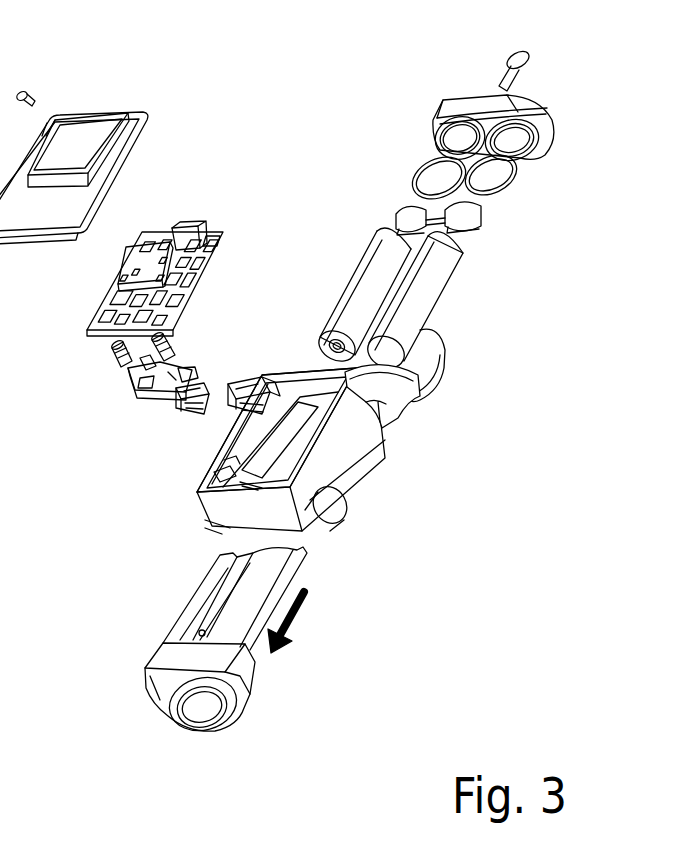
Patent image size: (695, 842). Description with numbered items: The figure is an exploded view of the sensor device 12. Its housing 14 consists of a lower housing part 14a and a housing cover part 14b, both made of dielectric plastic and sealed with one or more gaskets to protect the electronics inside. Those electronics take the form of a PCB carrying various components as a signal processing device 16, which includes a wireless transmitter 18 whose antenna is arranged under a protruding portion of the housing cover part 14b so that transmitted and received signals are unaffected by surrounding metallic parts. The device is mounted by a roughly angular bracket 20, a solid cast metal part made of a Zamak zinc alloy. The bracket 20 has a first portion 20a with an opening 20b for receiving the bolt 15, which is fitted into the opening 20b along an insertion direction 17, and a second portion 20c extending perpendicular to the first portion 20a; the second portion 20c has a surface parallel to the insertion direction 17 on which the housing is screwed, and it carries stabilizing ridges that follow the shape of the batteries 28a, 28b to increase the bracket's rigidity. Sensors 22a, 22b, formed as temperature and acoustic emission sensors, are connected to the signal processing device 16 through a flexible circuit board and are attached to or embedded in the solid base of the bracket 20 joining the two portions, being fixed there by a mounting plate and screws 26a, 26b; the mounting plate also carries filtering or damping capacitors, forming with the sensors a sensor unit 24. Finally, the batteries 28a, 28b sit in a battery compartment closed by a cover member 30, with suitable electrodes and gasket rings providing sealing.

The sensor device 12 is at (467, 327).
The housing 14 is at (273, 367).
The lower housing part 14a is at (308, 500).
The housing cover part 14b is at (83, 134).
The bolt 15 is at (400, 393).
The signal processing device 16 is at (220, 232).
The insertion direction 17 is at (292, 616).
The wireless transmitter 18 is at (153, 258).
The bracket 20 is at (237, 663).
The first portion 20a is at (247, 707).
The opening 20b is at (202, 712).
The second portion 20c is at (200, 612).
The sensor 22a is at (185, 400).
The sensor 22b is at (238, 402).
The sensor unit 24 is at (150, 380).
The screw 26a is at (115, 347).
The screw 26b is at (165, 348).
The battery 28a is at (370, 283).
The battery 28b is at (433, 275).
The cover member 30 is at (540, 120).